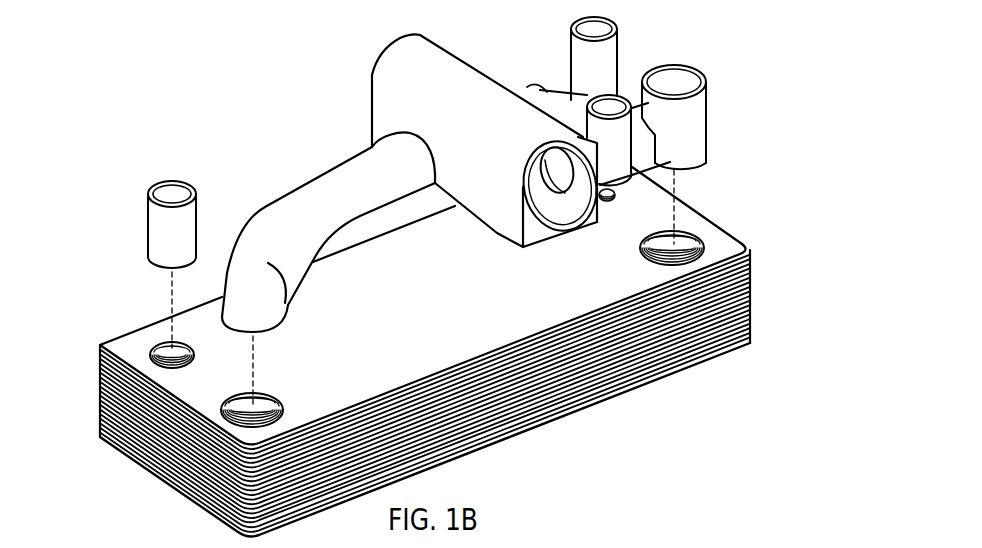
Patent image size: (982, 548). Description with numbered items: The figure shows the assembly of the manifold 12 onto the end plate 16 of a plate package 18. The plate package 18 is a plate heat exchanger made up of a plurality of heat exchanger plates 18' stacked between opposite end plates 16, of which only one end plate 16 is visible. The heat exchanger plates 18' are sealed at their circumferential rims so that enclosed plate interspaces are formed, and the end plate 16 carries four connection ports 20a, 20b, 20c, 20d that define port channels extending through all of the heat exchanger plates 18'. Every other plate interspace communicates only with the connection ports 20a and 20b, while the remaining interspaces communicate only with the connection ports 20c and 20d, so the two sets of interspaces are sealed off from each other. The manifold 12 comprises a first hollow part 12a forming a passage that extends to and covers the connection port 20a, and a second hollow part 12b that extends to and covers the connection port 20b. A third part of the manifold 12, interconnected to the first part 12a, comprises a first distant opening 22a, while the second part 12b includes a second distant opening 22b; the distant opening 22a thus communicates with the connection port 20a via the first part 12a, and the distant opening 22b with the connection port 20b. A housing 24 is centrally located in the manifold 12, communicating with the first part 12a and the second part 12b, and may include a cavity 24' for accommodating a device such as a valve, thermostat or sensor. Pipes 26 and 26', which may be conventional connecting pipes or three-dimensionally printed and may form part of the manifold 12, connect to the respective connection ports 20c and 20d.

The plate package 18 is at (440, 272).
The heat exchanger plates 18' is at (468, 292).
The end plate 16 is at (347, 342).
The connection port 20a is at (173, 182).
The connection port 20b is at (687, 233).
The connection port 20c is at (160, 358).
The connection port 20d is at (637, 181).
The pipe 26 is at (159, 178).
The pipe 26' is at (566, 56).
The manifold 12 is at (285, 165).
The first hollow part 12a is at (270, 233).
The second hollow part 12b is at (547, 97).
The housing 24 is at (497, 130).
The cavity 24' is at (465, 144).
The first distant opening 22a is at (603, 107).
The second distant opening 22b is at (672, 82).